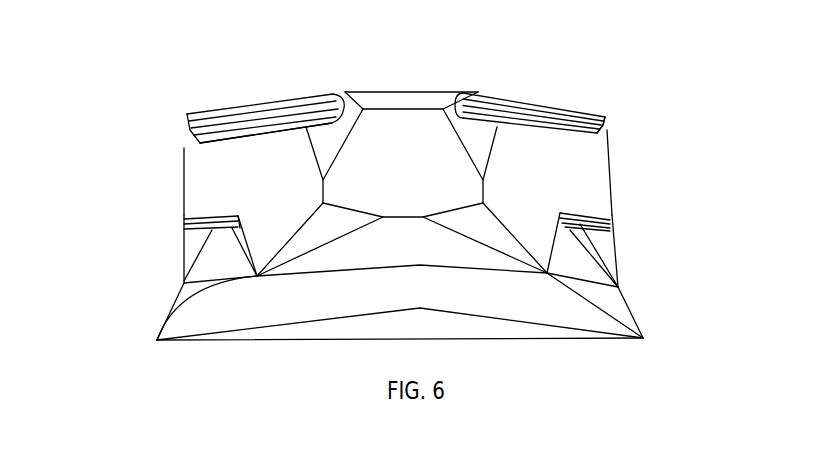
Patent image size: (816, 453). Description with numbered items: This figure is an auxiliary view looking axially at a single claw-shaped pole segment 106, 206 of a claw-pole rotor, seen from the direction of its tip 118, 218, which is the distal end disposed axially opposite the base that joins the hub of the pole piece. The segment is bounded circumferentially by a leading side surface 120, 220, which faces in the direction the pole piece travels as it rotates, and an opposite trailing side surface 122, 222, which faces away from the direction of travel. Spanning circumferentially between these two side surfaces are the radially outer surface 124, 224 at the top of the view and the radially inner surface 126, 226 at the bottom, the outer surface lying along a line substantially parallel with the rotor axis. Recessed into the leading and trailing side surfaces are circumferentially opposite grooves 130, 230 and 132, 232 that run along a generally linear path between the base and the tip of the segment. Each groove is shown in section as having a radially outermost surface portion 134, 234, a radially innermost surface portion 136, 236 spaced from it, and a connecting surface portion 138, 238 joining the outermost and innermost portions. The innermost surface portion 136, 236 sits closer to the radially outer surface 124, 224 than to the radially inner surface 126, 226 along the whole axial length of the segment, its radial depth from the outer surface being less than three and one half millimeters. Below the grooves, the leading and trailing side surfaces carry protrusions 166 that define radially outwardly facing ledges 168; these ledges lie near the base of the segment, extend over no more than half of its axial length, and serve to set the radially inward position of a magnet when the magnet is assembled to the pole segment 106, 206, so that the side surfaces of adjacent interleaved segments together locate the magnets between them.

The first pole segment 106 is at (449, 342).
The second pole segment 206 is at (640, 375).
The tip 118 is at (411, 77).
The tip 218 is at (447, 72).
The radially outer surface 124 is at (403, 110).
The radially outer surface 224 is at (345, 92).
The radially outermost surface portion 134 is at (371, 99).
The radially outermost surface portion 234 is at (188, 131).
The connecting surface portion 138 is at (383, 138).
The connecting surface portion 238 is at (193, 140).
The groove 132 is at (121, 110).
The groove 232 is at (150, 130).
The groove 130 is at (645, 97).
The groove 230 is at (634, 127).
The radially innermost surface portion 136 is at (379, 172).
The radially innermost surface portion 236 is at (186, 149).
The trailing side surface 122 is at (182, 205).
The trailing side surface 222 is at (273, 180).
The leading side surface 120 is at (591, 207).
The leading side surface 220 is at (533, 176).
The radially inner surface 126 is at (378, 303).
The radially inner surface 226 is at (420, 245).
The protrusion 166 is at (381, 255).
The ledge 168 is at (574, 210).